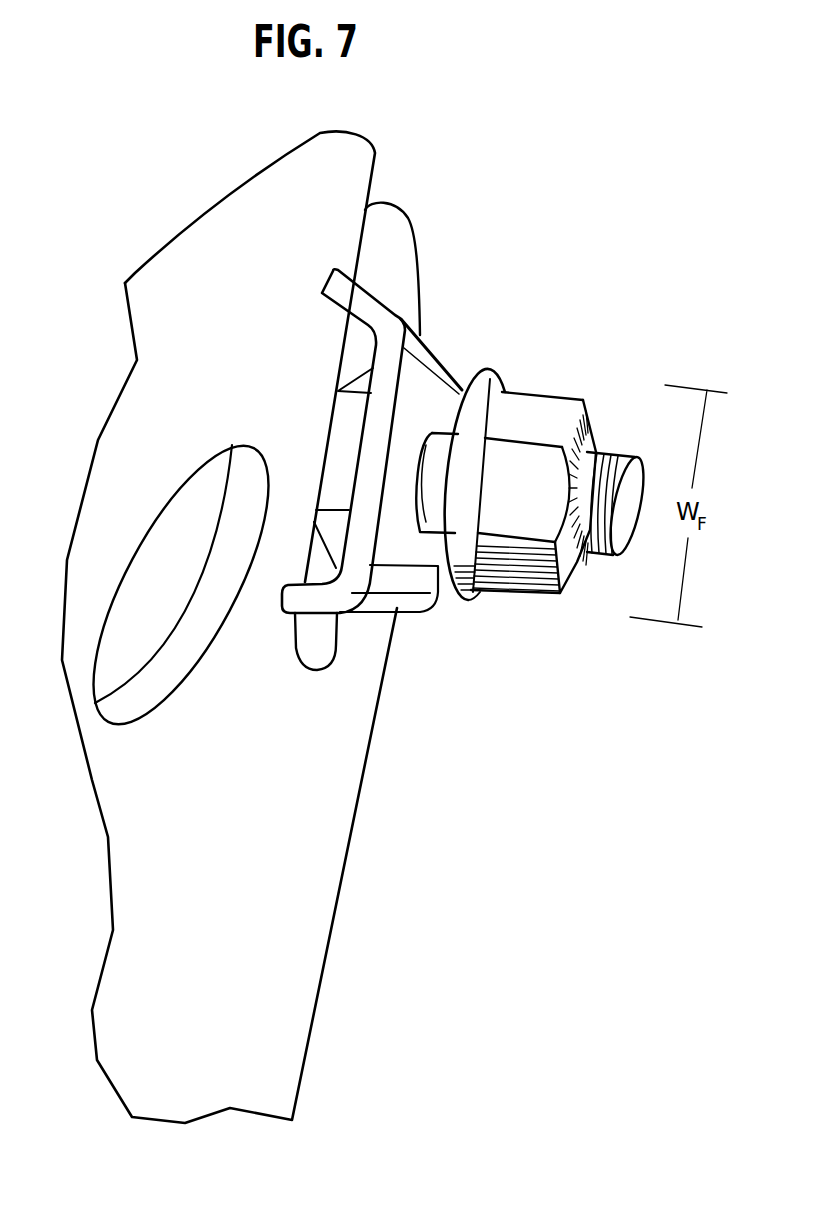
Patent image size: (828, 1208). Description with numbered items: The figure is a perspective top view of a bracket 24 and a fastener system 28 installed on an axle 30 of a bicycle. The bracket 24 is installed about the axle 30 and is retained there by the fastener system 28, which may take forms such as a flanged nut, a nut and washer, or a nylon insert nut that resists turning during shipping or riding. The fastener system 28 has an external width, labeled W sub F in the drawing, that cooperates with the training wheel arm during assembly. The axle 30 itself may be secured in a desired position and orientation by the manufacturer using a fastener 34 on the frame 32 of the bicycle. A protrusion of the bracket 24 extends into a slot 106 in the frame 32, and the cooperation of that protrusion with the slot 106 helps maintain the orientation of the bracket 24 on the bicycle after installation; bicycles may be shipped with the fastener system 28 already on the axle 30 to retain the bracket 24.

The frame 32 is at (170, 380).
The slot 106 is at (393, 248).
The bracket 24 is at (393, 550).
The fastener 34 is at (347, 408).
The fastener system 28 is at (527, 370).
The axle 30 is at (621, 452).